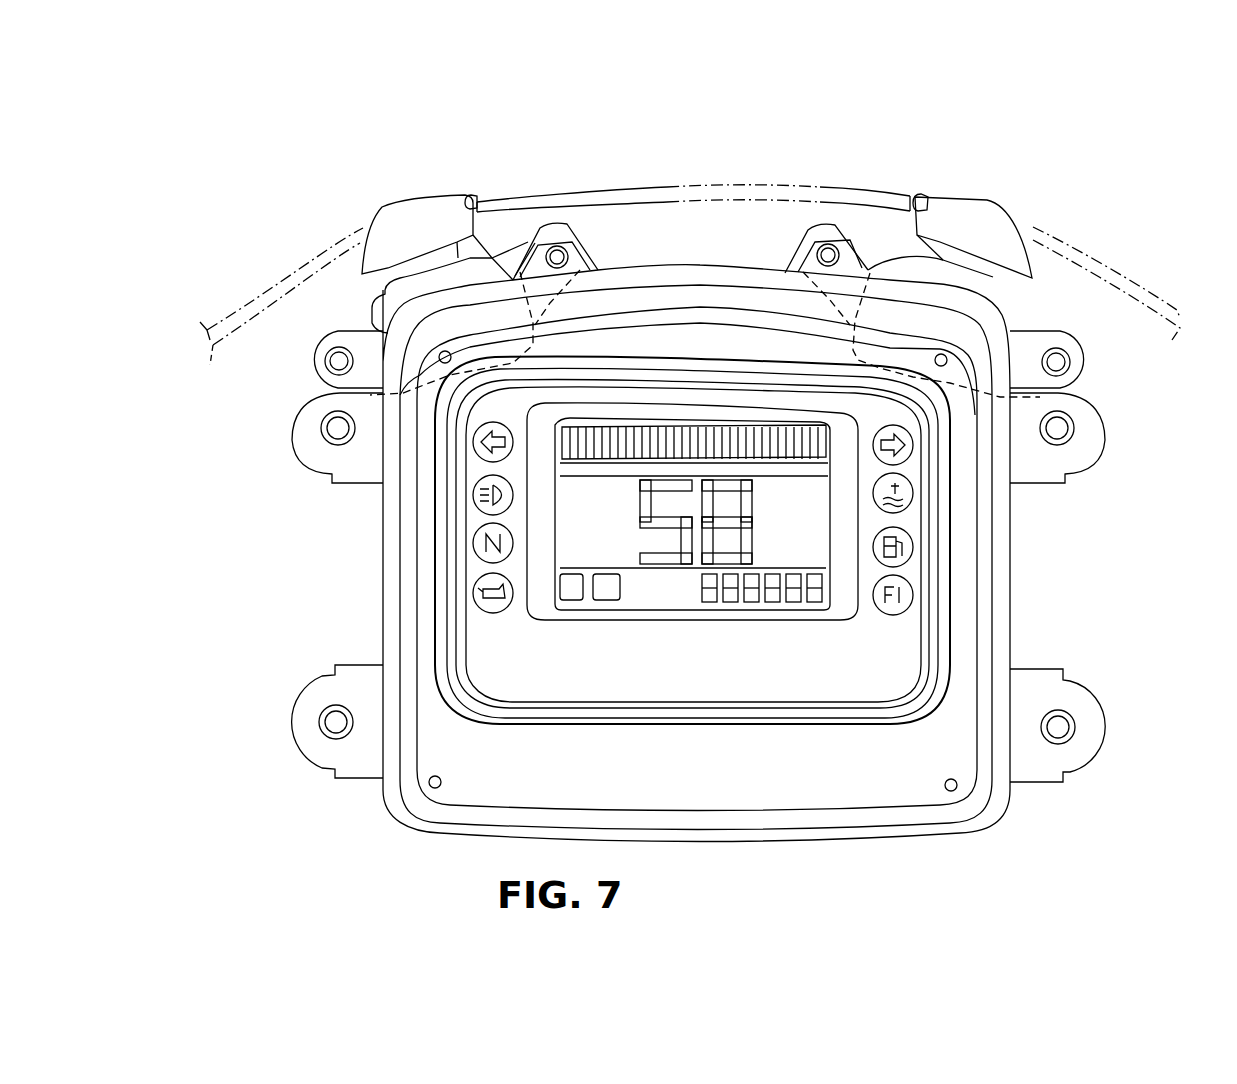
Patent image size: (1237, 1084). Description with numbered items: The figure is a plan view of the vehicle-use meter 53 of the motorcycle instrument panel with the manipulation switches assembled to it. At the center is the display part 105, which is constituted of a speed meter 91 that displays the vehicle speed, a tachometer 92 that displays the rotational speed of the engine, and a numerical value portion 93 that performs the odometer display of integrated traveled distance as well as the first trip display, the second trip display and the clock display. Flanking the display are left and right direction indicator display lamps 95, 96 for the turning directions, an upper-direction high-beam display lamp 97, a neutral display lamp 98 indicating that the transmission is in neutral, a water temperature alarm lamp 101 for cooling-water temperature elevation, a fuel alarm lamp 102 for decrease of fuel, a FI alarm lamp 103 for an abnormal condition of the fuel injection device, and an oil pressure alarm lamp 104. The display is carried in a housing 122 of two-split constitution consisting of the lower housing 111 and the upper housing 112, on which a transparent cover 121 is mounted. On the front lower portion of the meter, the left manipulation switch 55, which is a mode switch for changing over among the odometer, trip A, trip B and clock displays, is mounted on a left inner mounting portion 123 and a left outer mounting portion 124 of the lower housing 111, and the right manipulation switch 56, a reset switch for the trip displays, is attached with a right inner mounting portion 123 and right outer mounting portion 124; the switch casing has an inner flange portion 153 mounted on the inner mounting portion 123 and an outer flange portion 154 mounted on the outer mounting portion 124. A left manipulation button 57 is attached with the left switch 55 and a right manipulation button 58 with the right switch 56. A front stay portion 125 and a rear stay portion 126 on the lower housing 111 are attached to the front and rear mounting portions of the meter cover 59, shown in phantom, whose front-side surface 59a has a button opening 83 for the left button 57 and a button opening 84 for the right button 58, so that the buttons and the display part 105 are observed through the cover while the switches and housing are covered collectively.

The vehicle-use meter 53 is at (272, 203).
The left manipulation switch 55 is at (490, 247).
The right manipulation switch 56 is at (900, 243).
The left manipulation button 57 is at (432, 190).
The right manipulation button 58 is at (972, 190).
The meter cover 59 is at (1078, 237).
The front-side surface 59a is at (1098, 263).
The button opening 83 is at (470, 196).
The button opening 84 is at (927, 197).
The speed meter 91 is at (693, 560).
The tachometer 92 is at (612, 467).
The numerical value portion 93 is at (767, 603).
The left direction indicator display lamp 95 is at (474, 450).
The right direction indicator display lamp 96 is at (913, 455).
The upper-direction (high-beam) display lamp 97 is at (474, 498).
The neutral display lamp 98 is at (474, 545).
The water temperature alarm lamp 101 is at (913, 495).
The fuel alarm lamp 102 is at (915, 547).
The FI (fuel injection) alarm lamp 103 is at (913, 595).
The oil pressure alarm lamp 104 is at (474, 592).
The display part 105 is at (727, 400).
The lower housing 111 is at (1084, 773).
The upper housing 112 is at (1012, 802).
The transparent cover 121 is at (817, 682).
The housing 122 is at (1163, 793).
The inner mounting portion 123 is at (553, 230).
The outer mounting portion 124 is at (322, 347).
The front stay portion 125 is at (297, 433).
The rear stay portion 126 is at (290, 713).
The inner flange portion 153 is at (518, 247).
The outer flange portion 154 is at (363, 320).